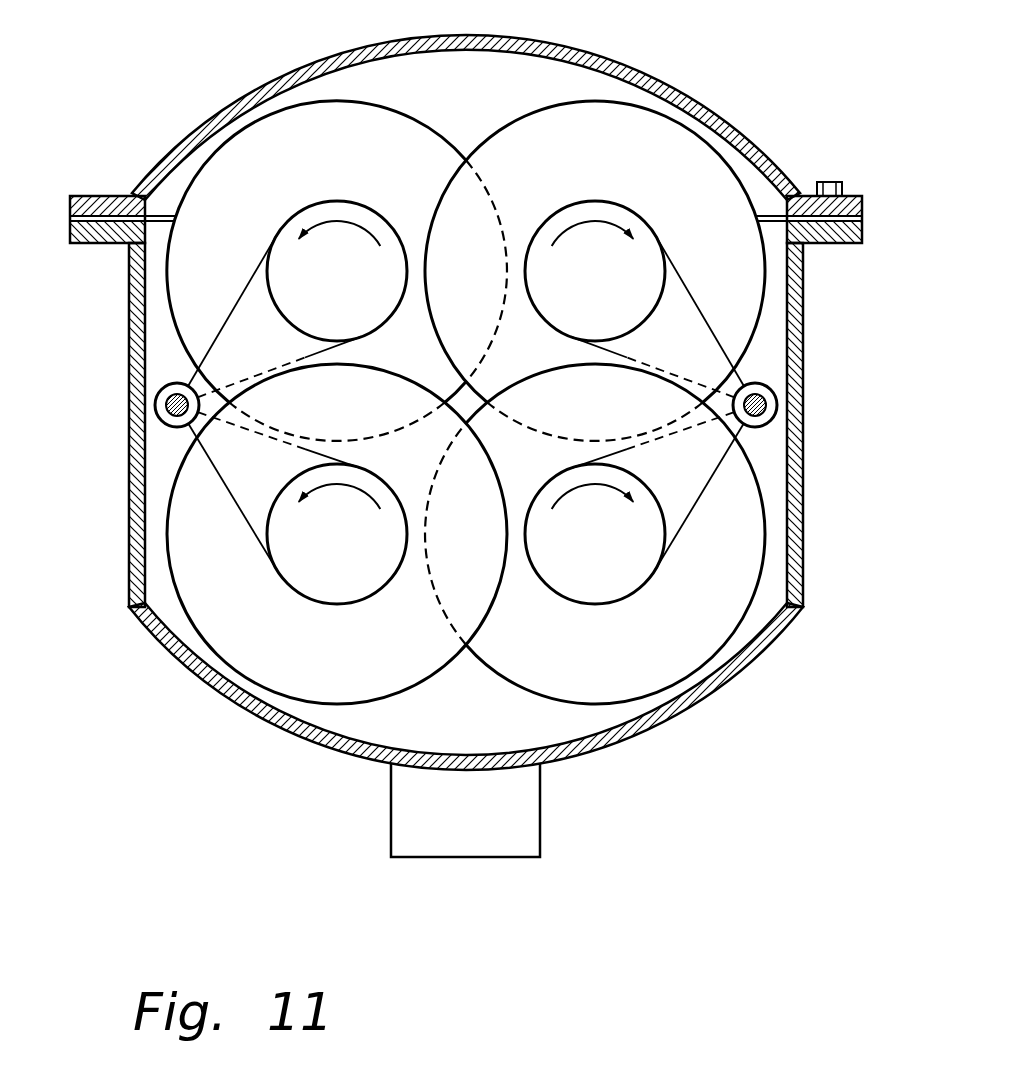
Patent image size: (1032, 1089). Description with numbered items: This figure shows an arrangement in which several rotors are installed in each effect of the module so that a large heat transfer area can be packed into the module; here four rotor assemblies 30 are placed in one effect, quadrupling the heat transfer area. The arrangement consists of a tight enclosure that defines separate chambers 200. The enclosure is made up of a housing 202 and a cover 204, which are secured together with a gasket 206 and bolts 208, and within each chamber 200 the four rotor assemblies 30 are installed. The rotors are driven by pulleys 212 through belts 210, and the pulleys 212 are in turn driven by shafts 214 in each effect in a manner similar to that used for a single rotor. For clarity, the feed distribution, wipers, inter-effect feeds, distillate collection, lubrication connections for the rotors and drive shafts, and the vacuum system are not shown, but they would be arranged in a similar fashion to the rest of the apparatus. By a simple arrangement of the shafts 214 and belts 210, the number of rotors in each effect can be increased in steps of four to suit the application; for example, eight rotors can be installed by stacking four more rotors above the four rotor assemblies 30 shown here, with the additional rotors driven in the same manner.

The rotor assembly 30 is at (529, 111).
The chamber 200 is at (484, 741).
The housing 202 is at (670, 718).
The cover 204 is at (636, 60).
The gasket 206 is at (863, 218).
The bolt 208 is at (823, 180).
The belt 210 is at (228, 314).
The pulley 212 is at (160, 386).
The shaft 214 is at (167, 409).